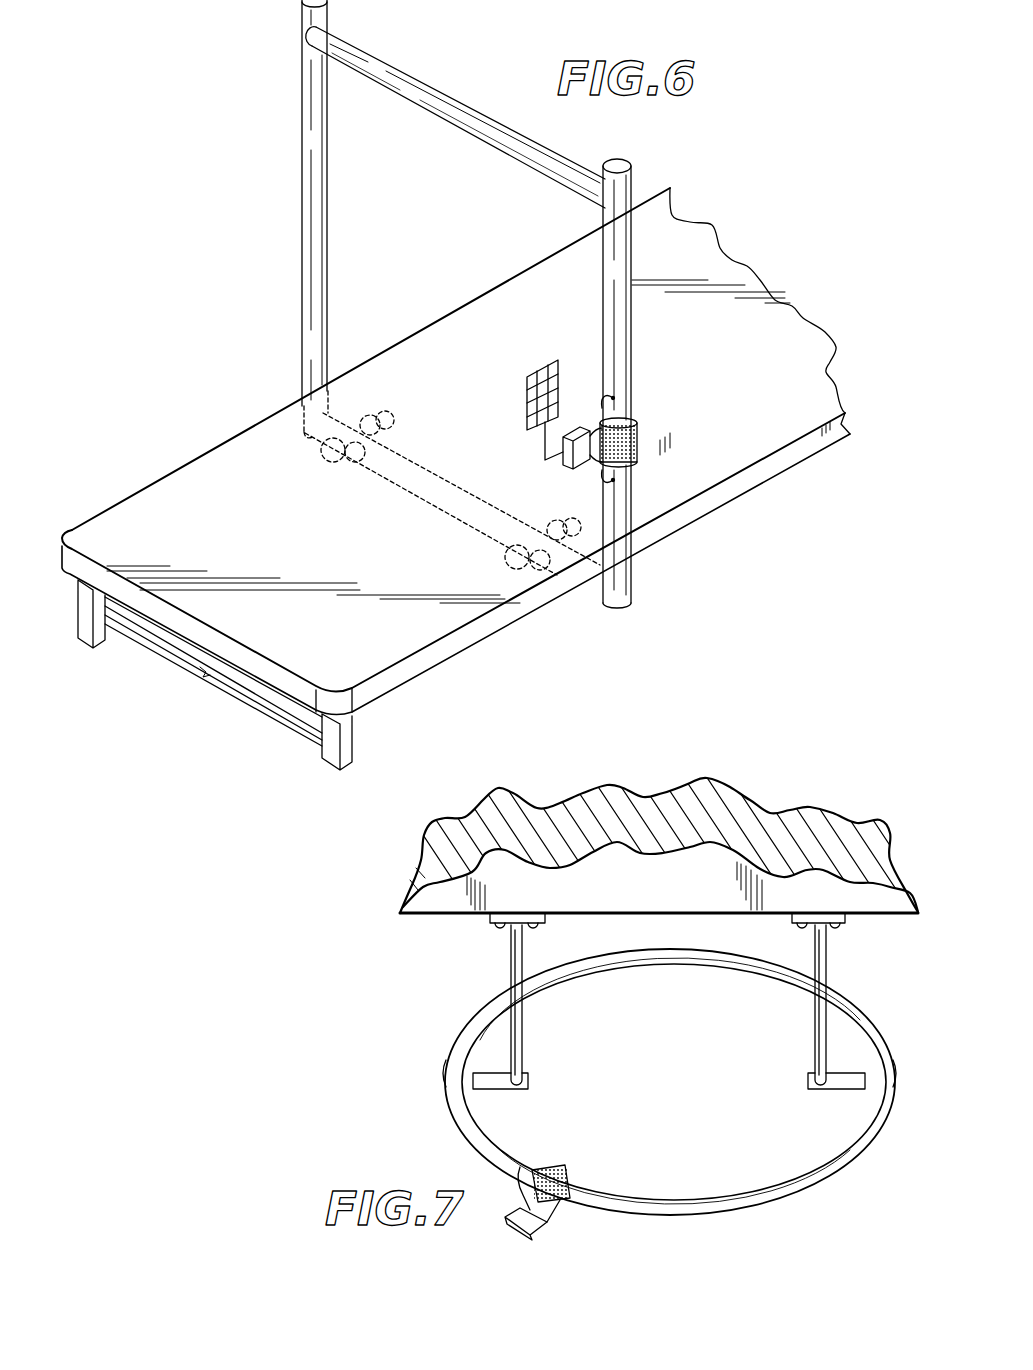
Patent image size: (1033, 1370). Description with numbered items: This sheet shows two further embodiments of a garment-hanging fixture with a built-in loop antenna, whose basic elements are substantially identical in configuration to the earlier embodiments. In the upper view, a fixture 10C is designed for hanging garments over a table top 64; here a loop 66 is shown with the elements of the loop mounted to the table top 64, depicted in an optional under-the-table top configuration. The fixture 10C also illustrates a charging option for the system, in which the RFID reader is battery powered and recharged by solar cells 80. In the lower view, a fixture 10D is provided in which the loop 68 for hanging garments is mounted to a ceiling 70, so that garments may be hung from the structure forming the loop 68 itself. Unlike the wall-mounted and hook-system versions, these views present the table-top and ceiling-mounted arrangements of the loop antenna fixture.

In FIG. 6, the fixture 10C is at (718, 208).
In FIG. 6, the table top 64 is at (700, 477).
In FIG. 6, the loop 66 is at (630, 348).
In FIG. 6, the solar cells 80 is at (543, 370).
In FIG. 7, the fixture 10D is at (699, 749).
In FIG. 7, the ceiling 70 is at (865, 905).
In FIG. 7, the loop 68 is at (793, 1184).